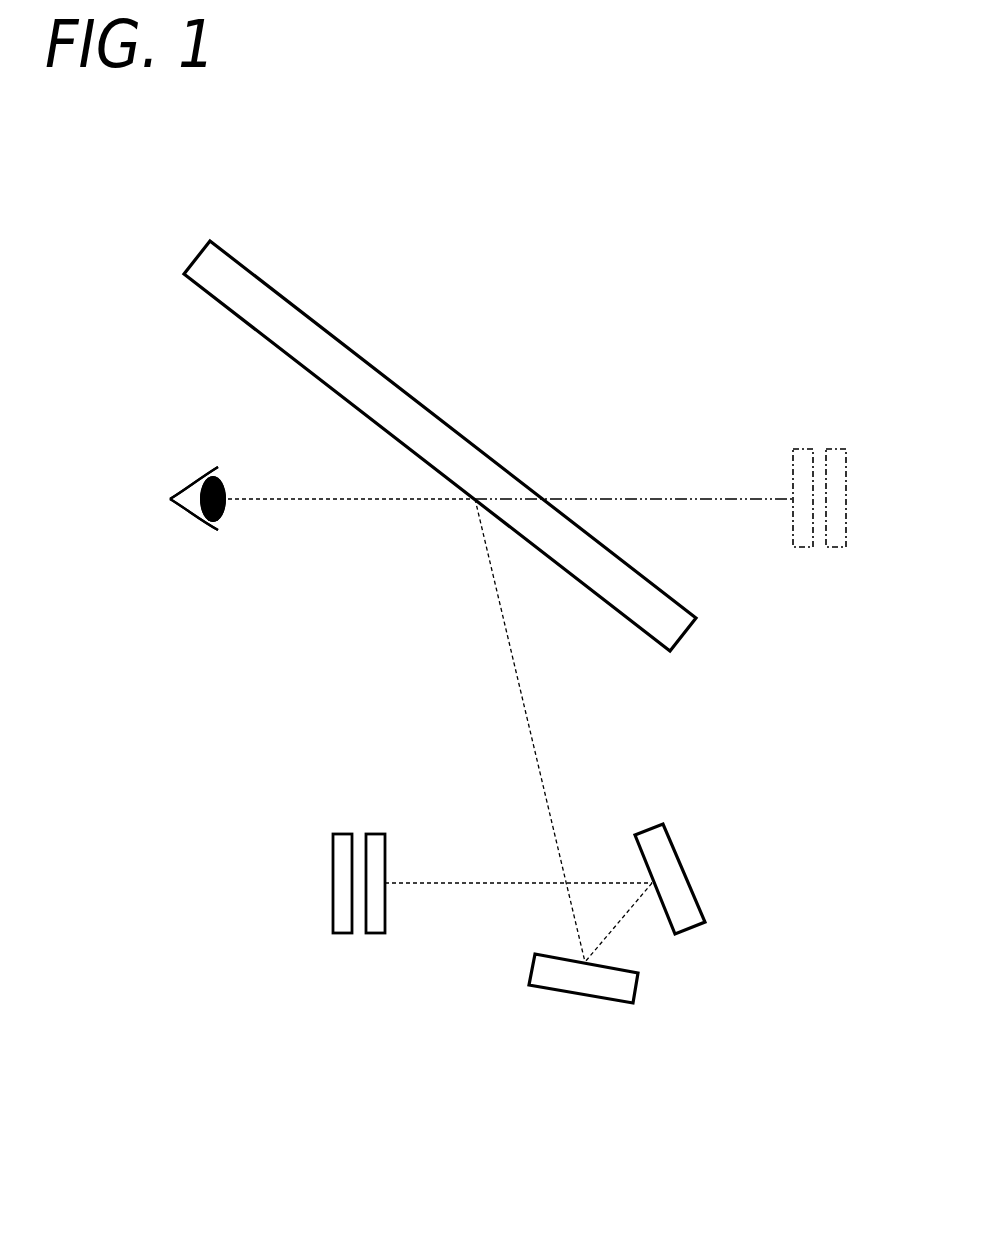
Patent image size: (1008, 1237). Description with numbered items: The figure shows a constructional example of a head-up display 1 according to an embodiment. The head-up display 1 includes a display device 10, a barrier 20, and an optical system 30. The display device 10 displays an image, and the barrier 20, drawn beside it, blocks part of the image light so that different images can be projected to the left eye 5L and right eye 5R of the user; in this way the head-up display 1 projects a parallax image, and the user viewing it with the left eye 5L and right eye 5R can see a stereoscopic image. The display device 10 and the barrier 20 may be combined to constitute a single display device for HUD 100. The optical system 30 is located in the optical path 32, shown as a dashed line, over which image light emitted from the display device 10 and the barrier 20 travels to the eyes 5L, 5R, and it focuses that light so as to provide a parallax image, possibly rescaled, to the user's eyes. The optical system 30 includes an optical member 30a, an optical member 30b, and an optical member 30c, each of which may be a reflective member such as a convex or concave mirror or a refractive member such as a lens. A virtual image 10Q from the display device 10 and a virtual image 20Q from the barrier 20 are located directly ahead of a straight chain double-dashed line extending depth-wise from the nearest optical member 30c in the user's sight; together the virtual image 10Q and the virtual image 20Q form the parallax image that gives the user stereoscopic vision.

The head-up display 1 is at (542, 322).
The left eye 5L is at (207, 520).
The right eye 5R is at (198, 498).
The display device 10 is at (340, 935).
The barrier 20 is at (386, 909).
The display device for HUD 100 is at (355, 929).
The virtual image from the display device 10Q is at (835, 449).
The virtual image from the barrier 20Q is at (805, 449).
The optical system 30 is at (493, 645).
The optical member 30a is at (574, 995).
The optical member 30b is at (688, 866).
The optical member 30c is at (319, 338).
The optical path 32 is at (518, 680).